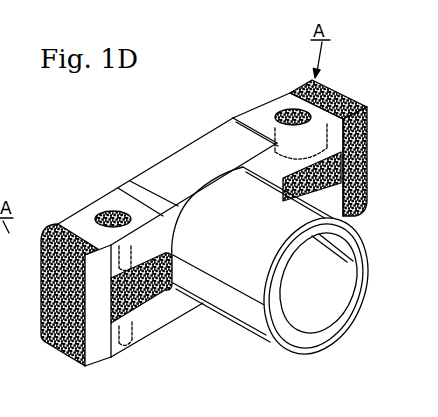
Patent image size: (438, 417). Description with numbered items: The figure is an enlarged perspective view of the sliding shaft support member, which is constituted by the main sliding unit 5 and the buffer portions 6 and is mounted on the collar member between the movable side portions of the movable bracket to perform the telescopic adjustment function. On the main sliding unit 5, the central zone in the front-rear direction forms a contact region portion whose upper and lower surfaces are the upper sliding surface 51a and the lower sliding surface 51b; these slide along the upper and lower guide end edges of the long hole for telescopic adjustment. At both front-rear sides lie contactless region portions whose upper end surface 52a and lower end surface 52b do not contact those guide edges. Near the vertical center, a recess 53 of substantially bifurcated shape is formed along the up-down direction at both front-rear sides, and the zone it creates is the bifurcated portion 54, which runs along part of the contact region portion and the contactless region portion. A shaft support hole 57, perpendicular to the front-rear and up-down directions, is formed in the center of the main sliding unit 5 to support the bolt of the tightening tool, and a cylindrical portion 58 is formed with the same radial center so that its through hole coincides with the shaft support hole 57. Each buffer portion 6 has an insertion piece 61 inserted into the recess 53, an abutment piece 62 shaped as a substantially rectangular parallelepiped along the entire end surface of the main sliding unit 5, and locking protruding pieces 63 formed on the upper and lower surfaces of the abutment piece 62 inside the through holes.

The main sliding unit 5 is at (168, 210).
The buffer portion 6 is at (206, 225).
The upper sliding surface 51a is at (192, 147).
The lower sliding surface 51b is at (200, 313).
The upper end surface 52a is at (83, 220).
The lower end surface 52b is at (127, 347).
The recess 53 is at (143, 297).
The bifurcated portion 54 is at (97, 195).
The shaft support hole 57 is at (279, 269).
The cylindrical portion 58 is at (250, 325).
The insertion piece 61 is at (162, 252).
The abutment piece 62 is at (72, 355).
The locking protruding piece 63 is at (115, 211).